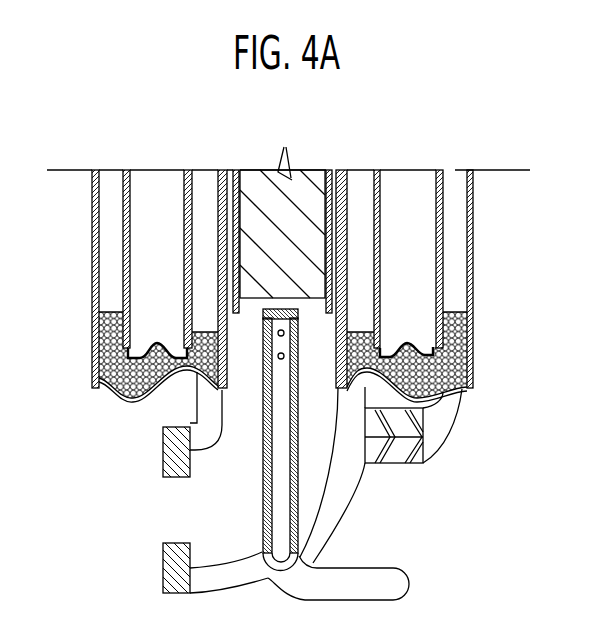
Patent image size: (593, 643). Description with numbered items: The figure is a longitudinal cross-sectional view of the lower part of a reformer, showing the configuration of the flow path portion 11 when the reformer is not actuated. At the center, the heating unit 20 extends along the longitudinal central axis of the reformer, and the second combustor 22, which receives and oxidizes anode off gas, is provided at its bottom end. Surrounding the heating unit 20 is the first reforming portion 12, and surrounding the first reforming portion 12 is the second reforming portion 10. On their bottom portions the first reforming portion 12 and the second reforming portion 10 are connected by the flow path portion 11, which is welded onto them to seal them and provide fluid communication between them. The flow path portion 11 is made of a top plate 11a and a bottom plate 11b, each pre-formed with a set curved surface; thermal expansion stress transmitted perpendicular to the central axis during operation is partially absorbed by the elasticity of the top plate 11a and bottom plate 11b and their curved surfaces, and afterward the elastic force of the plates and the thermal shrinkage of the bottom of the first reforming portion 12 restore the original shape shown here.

The second reforming portion 10 is at (304, 242).
The flow path portion 11 is at (473, 338).
The top plate 11a is at (147, 352).
The bottom plate 11b is at (133, 402).
The first reforming portion 12 is at (357, 195).
The heating unit 20 is at (268, 185).
The second combustor 22 is at (264, 375).